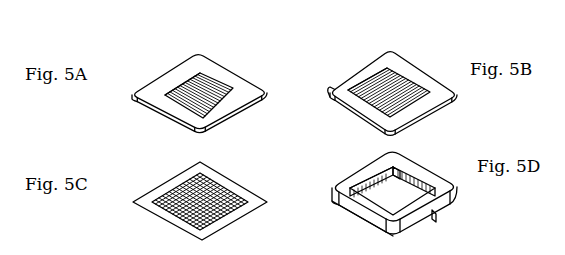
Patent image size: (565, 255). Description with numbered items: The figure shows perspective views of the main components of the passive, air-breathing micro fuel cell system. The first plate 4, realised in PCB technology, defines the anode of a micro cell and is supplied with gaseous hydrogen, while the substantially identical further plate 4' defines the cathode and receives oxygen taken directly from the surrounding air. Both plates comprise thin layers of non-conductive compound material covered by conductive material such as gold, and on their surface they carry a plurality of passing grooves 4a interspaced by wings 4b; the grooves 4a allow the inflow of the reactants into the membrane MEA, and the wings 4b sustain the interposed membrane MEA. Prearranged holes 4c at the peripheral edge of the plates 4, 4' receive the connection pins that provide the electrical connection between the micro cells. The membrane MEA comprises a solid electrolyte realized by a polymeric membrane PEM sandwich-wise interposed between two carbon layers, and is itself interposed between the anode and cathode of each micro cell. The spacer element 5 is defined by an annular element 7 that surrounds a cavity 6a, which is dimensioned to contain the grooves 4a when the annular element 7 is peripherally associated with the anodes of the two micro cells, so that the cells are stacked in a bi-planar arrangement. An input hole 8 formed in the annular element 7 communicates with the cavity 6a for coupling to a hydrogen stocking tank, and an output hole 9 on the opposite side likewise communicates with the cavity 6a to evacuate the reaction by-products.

In FIG. 5A, the first plate 4 is at (201, 92).
In FIG. 5A, the passing grooves 4a is at (208, 78).
In FIG. 5B, the passing grooves 4a is at (398, 72).
In FIG. 5A, the wings 4b is at (183, 80).
In FIG. 5B, the wings 4b is at (368, 80).
In FIG. 5B, the further plate 4' is at (393, 85).
In FIG. 5B, the prearranged holes 4c is at (332, 90).
In FIG. 5C, the polymeric membrane PEM is at (178, 195).
In FIG. 5C, the membrane MEA is at (210, 176).
In FIG. 5D, the spacer element 5 is at (414, 153).
In FIG. 5D, the cavity 6a is at (415, 183).
In FIG. 5D, the input hole 8 is at (380, 170).
In FIG. 5D, the annular element 7 is at (365, 210).
In FIG. 5D, the output hole 9 is at (435, 213).